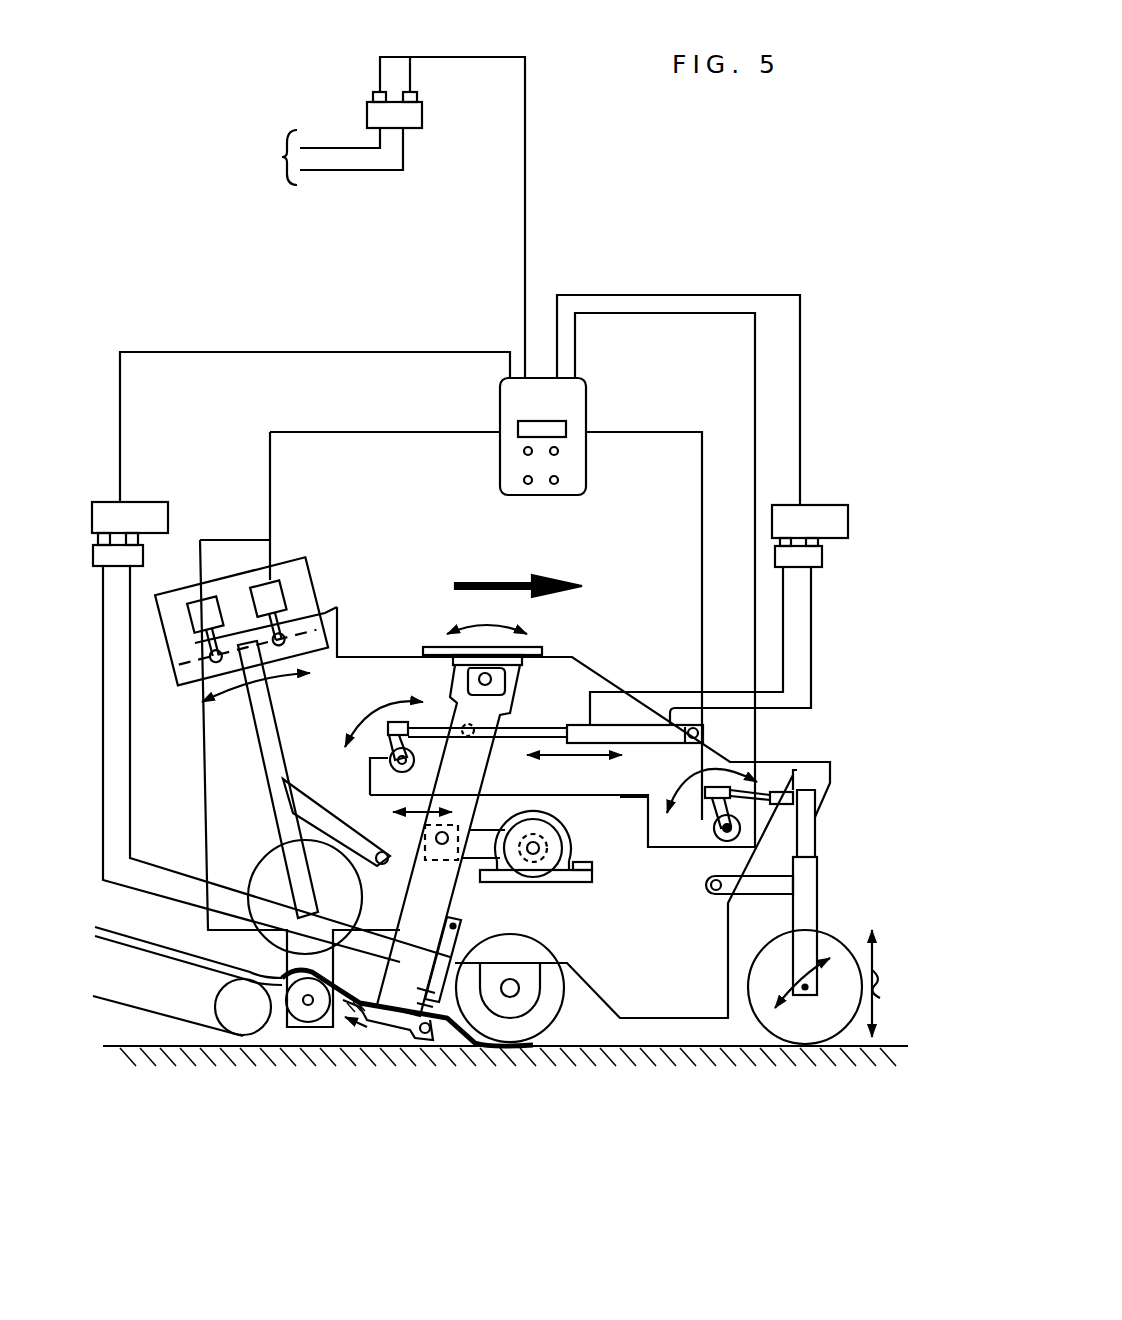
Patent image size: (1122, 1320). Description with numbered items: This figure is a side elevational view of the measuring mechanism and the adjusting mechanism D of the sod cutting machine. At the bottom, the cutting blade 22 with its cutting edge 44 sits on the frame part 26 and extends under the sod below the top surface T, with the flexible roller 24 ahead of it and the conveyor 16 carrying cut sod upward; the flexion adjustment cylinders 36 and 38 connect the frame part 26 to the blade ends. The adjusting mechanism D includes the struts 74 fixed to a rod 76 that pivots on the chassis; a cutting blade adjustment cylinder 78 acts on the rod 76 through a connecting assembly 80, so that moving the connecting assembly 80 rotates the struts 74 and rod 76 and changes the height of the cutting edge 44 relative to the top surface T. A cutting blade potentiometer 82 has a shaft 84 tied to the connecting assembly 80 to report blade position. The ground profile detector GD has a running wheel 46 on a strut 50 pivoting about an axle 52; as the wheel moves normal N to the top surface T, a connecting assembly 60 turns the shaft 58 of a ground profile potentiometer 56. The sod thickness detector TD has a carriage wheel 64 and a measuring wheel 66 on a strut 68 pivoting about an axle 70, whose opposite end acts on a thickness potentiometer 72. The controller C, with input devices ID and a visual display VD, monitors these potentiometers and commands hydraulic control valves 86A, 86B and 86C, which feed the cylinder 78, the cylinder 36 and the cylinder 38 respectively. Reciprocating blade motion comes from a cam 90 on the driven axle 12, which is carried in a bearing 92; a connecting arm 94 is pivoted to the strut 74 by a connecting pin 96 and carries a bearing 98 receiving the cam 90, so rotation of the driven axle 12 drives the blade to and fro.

The driven axle 12 is at (542, 850).
The conveyor 16 is at (150, 1012).
The cutting blade 22 is at (417, 1040).
The flexible roller 24 is at (530, 1028).
The frame part 26 is at (383, 1035).
The adjustment cylinder 36 is at (447, 1020).
The adjustment cylinder 38 is at (269, 168).
The cutting edge 44 is at (473, 1050).
The running wheel 46 is at (810, 1030).
The strut 50 is at (805, 888).
The axle 52 is at (710, 892).
The ground profile potentiometer 56 is at (717, 845).
The shaft 58 is at (715, 838).
The connecting assembly 60 is at (772, 795).
The carriage wheel 64 is at (317, 1018).
The measuring wheel 66 is at (262, 955).
The strut 68 is at (278, 738).
The axle 70 is at (390, 862).
The thickness potentiometer 72 is at (237, 575).
The strut 74 is at (443, 883).
The rod 76 is at (492, 675).
The cutting blade adjustment cylinder 78 is at (687, 727).
The connecting assembly 80 is at (515, 723).
The cutting blade potentiometer 82 is at (385, 720).
The shaft 84 is at (372, 768).
The hydraulic control valve 86A is at (822, 558).
The hydraulic control valve 86B is at (143, 556).
The hydraulic control valve 86C is at (370, 118).
The cam 90 is at (548, 856).
The bearing 92 is at (592, 876).
The connecting arm 94 is at (490, 797).
The connecting pin 96 is at (436, 838).
The bearing 98 is at (567, 822).
The controller C is at (541, 378).
The visual display VD is at (553, 428).
The input device ID is at (558, 451).
The adjusting mechanism D is at (415, 637).
The sod thickness detector TD is at (235, 760).
The ground profile detector GD is at (820, 845).
The normal direction N is at (889, 983).
The top surface T is at (628, 1048).